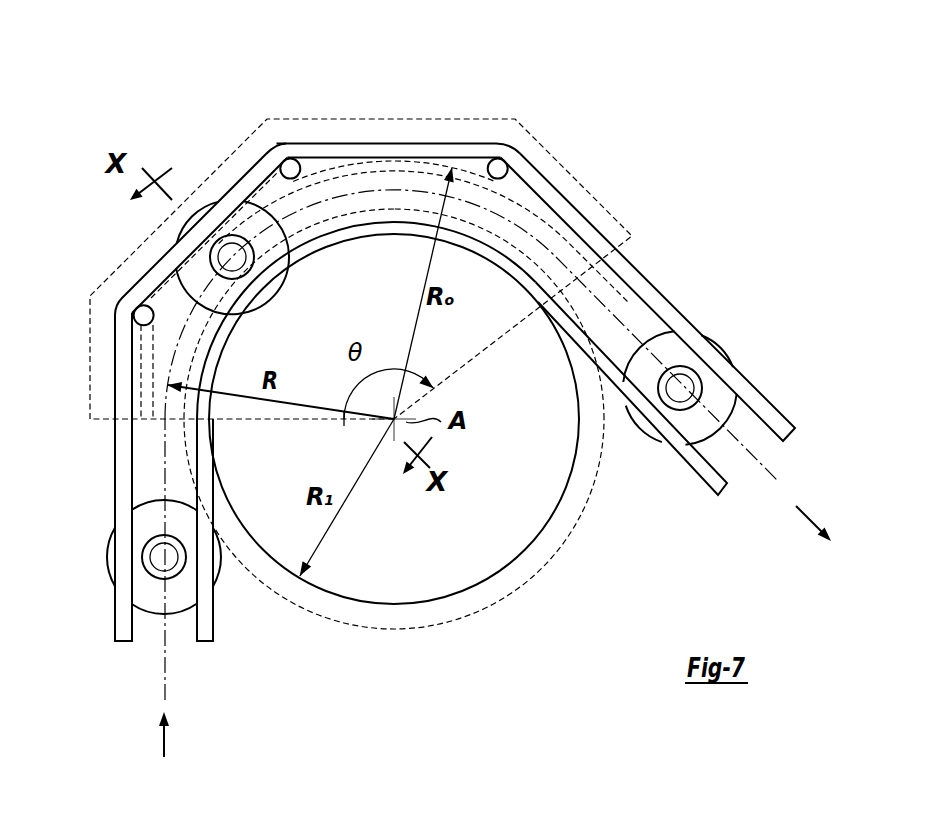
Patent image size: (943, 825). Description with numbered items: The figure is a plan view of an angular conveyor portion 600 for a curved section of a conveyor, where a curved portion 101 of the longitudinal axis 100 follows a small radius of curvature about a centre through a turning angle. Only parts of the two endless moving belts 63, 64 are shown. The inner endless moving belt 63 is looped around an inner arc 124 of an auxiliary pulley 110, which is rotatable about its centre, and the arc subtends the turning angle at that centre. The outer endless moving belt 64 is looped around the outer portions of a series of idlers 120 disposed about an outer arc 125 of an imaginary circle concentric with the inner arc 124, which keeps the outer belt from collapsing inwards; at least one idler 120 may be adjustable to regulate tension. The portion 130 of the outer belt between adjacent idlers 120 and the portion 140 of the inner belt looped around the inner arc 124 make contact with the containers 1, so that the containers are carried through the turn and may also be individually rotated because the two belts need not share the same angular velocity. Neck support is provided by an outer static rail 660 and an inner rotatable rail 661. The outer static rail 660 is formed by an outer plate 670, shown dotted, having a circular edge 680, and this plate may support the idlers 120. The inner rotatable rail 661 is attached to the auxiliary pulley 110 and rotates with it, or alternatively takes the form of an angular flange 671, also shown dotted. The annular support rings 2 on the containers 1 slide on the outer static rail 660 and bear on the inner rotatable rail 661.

The angular conveyor portion 600 is at (150, 102).
The auxiliary pulley 110 is at (560, 454).
The inner arc 124 is at (216, 366).
The inner rotatable rail 661 is at (190, 448).
The angular flange 671 is at (566, 532).
The outer arc 125 is at (390, 156).
The portion of endless moving belt 130 is at (214, 205).
The endless moving belt 64 is at (124, 614).
The endless moving belt 63 is at (212, 629).
The curved portion of longitudinal axis 101 is at (513, 223).
The longitudinal axis 100 is at (722, 479).
The container 1 is at (196, 210).
The annular support ring 2 is at (192, 254).
The idler 120 is at (290, 160).
The portion of inner endless moving belt 140 is at (263, 281).
The circular edge 680 is at (146, 358).
The outer static rail 660 is at (128, 389).
The outer plate 670 is at (108, 411).